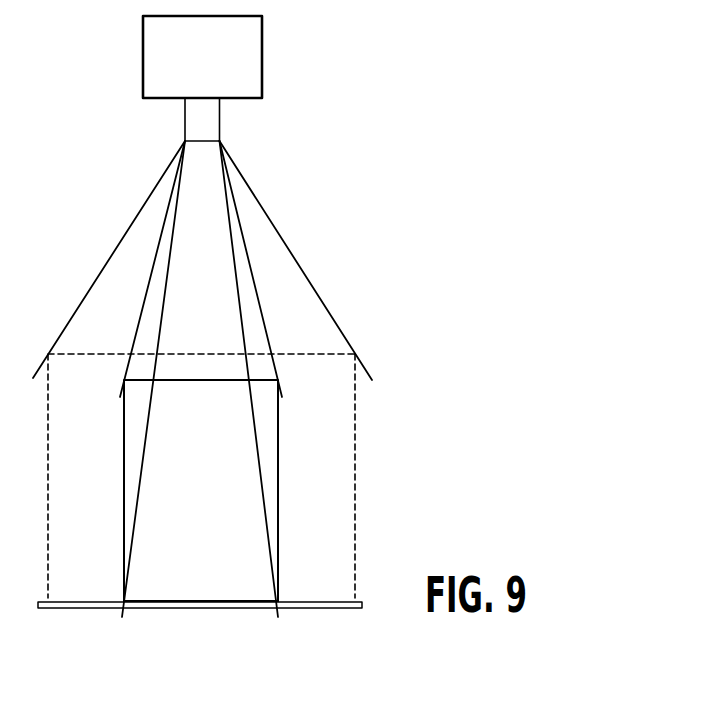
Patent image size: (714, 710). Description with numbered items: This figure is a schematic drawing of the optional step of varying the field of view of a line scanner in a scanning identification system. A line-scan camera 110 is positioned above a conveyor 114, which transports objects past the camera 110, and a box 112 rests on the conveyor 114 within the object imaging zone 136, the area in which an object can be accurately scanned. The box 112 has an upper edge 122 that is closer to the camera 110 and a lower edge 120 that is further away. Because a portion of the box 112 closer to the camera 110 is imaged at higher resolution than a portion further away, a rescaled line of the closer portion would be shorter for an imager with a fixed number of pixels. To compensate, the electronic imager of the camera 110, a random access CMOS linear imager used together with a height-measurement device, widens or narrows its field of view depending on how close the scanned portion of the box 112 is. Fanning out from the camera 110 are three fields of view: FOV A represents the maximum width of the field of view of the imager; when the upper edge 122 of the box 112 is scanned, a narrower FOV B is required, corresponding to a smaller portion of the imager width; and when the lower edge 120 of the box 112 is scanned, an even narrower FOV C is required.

The line-scan camera 110 is at (262, 57).
The box 112 is at (217, 503).
The conveyor 114 is at (330, 608).
The lower edge 120 is at (168, 600).
The upper edge 122 is at (197, 383).
The object imaging zone 136 is at (325, 354).
The FOV A is at (145, 200).
The FOV B is at (145, 298).
The FOV C is at (171, 247).